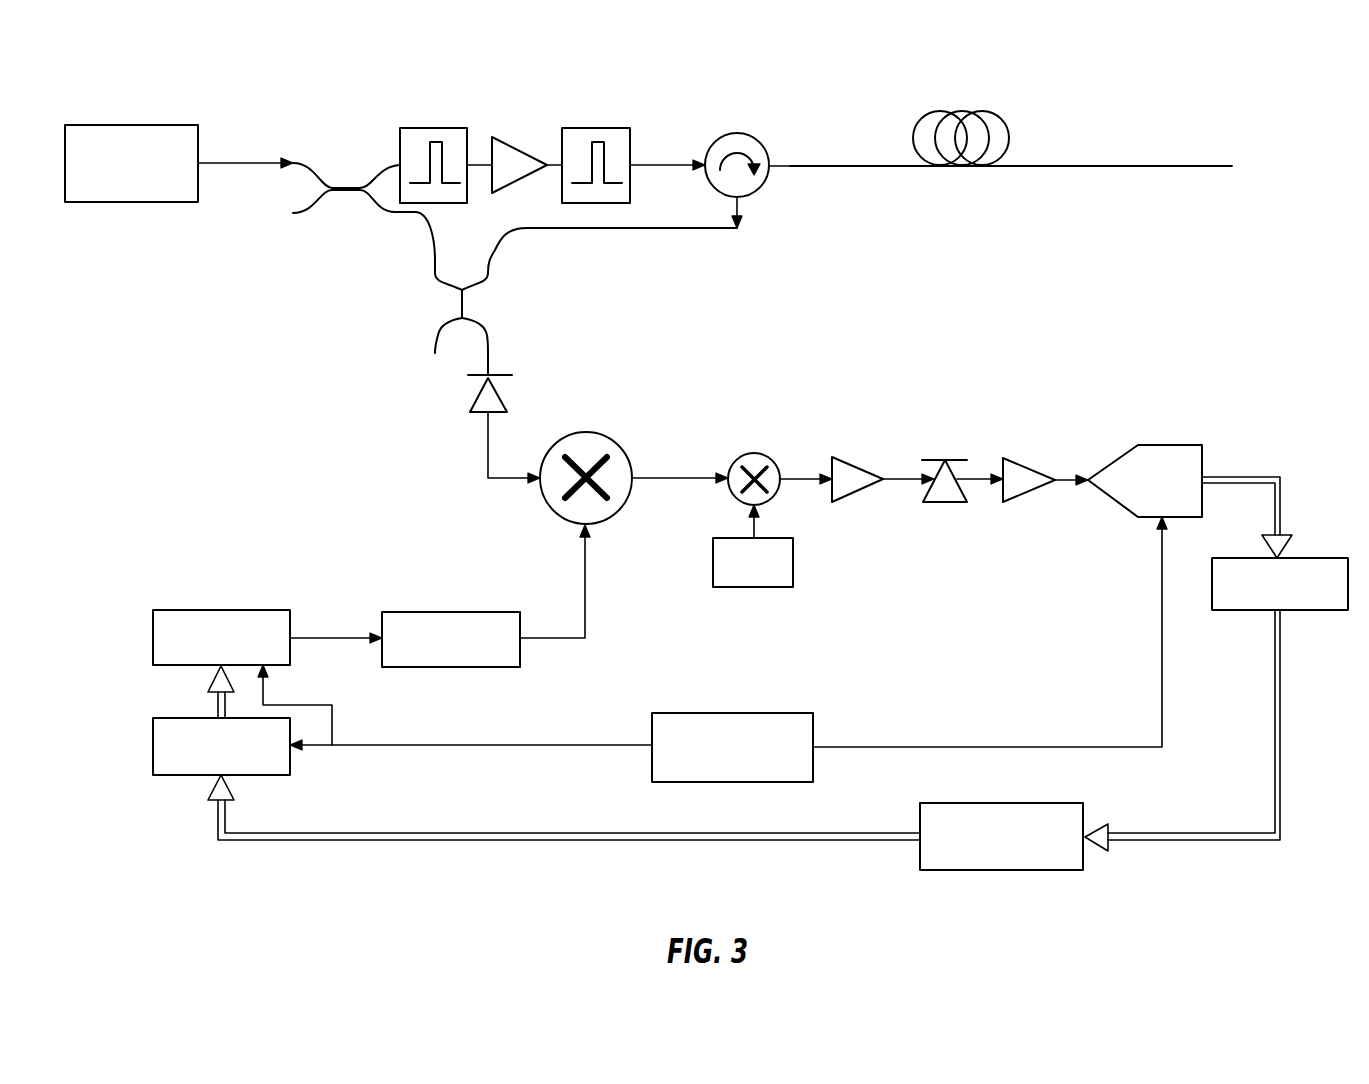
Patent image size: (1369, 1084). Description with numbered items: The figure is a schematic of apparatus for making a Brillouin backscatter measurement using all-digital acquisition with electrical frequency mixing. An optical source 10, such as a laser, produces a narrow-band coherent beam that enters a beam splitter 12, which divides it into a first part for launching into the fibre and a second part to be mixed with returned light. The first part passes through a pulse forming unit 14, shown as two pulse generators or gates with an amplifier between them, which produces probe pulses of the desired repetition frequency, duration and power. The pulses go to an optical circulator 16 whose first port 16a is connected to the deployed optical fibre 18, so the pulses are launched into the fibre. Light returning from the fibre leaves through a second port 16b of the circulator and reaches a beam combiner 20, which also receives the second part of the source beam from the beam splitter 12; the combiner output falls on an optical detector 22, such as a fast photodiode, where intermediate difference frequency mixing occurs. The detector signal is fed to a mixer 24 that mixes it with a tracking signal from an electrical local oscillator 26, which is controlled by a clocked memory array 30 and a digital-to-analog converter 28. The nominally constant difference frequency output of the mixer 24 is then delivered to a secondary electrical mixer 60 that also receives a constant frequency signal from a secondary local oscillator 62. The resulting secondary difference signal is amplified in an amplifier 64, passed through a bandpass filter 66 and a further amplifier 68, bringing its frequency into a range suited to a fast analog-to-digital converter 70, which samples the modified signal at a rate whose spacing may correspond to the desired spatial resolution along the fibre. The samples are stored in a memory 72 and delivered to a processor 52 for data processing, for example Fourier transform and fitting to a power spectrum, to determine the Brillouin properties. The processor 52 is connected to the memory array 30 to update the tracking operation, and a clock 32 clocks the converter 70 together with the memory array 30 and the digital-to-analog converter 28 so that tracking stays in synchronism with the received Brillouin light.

The optical source 10 is at (140, 177).
The beam splitter 12 is at (325, 205).
The pulse forming unit 14 is at (645, 120).
The optical circulator 16 is at (735, 133).
The first port 16a is at (770, 172).
The second port 16b is at (745, 203).
The deployed optical fibre 18 is at (1138, 167).
The beam combiner 20 is at (478, 327).
The optical detector 22 is at (474, 393).
The mixer 24 is at (548, 503).
The electrical local oscillator 26 is at (467, 654).
The digital-to-analog converter 28 is at (237, 652).
The clocked memory array 30 is at (237, 762).
The clock 32 is at (748, 761).
The processor 52 is at (1018, 851).
The secondary electrical mixer 60 is at (752, 453).
The secondary local oscillator 62 is at (770, 577).
The amplifier 64 is at (858, 490).
The bandpass filter 66 is at (945, 505).
The further amplifier 68 is at (1028, 494).
The analog-to-digital converter 70 is at (1173, 490).
The memory 72 is at (1295, 597).